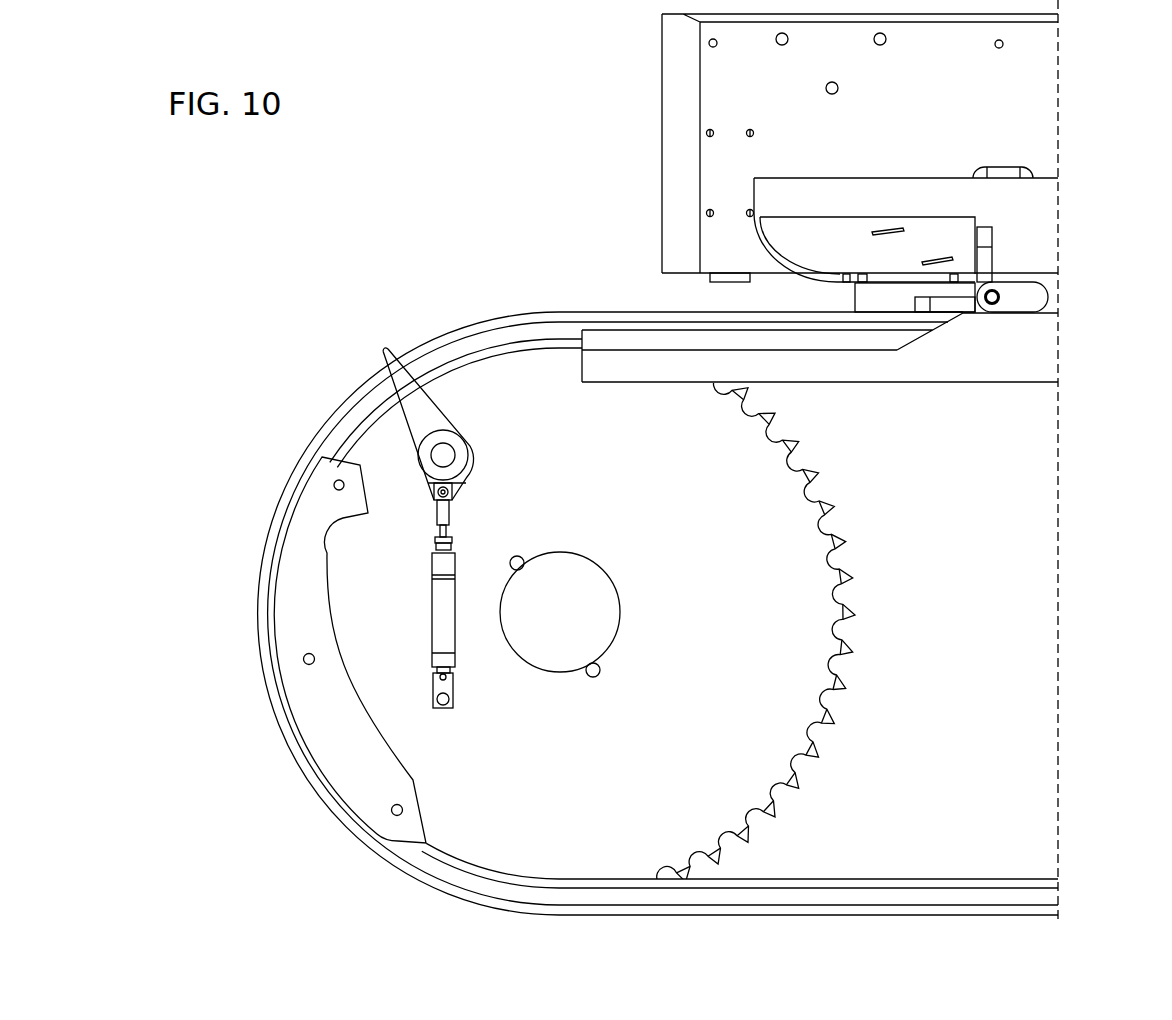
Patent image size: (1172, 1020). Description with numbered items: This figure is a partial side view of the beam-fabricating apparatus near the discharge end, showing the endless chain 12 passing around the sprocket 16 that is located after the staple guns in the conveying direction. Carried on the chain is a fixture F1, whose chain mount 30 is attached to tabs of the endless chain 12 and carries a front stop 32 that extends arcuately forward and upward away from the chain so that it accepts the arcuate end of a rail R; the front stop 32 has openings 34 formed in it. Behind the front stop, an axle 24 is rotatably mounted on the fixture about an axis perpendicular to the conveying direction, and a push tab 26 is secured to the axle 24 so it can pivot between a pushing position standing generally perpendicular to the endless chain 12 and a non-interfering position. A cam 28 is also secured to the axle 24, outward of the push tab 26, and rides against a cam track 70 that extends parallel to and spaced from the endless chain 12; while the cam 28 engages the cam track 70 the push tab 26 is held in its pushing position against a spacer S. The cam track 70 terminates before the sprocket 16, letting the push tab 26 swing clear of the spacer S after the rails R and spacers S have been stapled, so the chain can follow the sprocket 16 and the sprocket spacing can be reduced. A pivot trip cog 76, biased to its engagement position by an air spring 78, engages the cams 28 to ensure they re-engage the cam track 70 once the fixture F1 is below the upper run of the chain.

The endless chain 12 is at (918, 900).
The sprocket 16 is at (760, 636).
The axle 24 is at (998, 303).
The push tab 26 is at (985, 265).
The cam 28 is at (1017, 297).
The chain mount 30 is at (892, 283).
The front stop 32 is at (760, 237).
The openings 34 is at (817, 277).
The cam track 70 is at (988, 363).
The pivot trip cog 76 is at (425, 408).
The air spring 78 is at (443, 622).
The fixture F1 is at (774, 238).
The spacer S is at (952, 238).
The rail R is at (1022, 205).